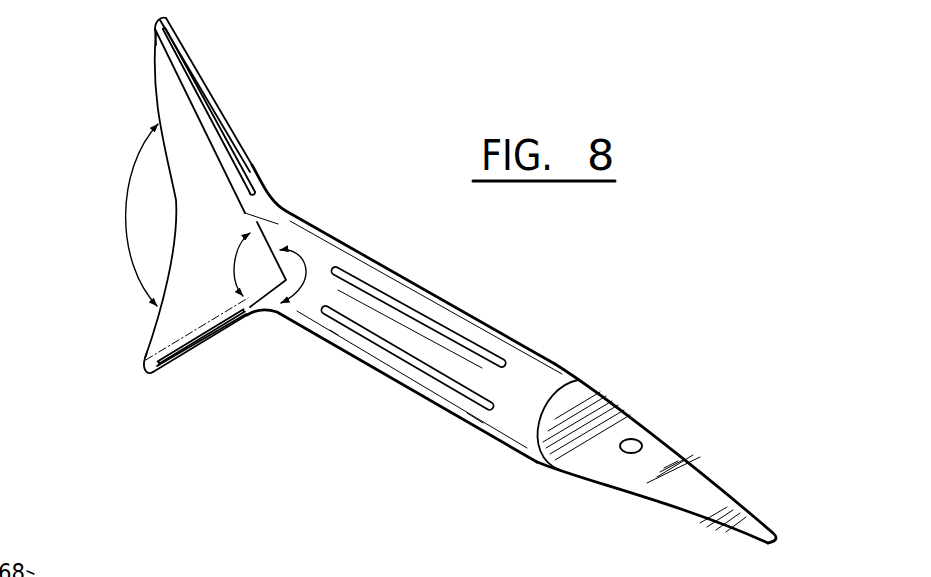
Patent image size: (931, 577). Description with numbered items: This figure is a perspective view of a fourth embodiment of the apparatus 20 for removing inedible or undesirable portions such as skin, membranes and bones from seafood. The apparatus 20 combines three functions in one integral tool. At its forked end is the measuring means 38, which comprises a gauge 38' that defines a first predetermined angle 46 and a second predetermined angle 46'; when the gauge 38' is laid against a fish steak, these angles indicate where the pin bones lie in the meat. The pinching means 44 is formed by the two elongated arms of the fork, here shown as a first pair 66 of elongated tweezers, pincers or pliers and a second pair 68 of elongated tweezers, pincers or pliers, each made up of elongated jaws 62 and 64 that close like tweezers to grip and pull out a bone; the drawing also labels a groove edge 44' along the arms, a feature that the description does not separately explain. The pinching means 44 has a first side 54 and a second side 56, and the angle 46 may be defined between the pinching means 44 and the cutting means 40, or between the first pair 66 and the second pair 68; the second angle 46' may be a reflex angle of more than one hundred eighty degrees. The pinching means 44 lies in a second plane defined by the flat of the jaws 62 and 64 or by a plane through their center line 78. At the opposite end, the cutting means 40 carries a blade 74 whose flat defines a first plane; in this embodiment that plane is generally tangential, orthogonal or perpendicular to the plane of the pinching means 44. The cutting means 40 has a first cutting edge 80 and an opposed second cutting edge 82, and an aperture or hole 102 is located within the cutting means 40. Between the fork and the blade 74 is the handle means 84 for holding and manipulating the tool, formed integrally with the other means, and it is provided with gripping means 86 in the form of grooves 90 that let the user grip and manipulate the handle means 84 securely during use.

The apparatus 20 is at (526, 499).
The measuring means 38 is at (234, 195).
The gauge 38' is at (284, 176).
The cutting means 40 is at (628, 482).
The pinching means 44 is at (223, 219).
The groove edge 44' is at (207, 108).
The first predetermined angle 46 is at (187, 263).
The second predetermined angle 46' is at (356, 235).
The first side of pinching means 54 is at (153, 110).
The second side of pinching means 56 is at (160, 72).
The jaw 62 is at (152, 53).
The jaw 64 is at (175, 33).
The first pair of elongated tweezers 66 is at (150, 377).
The second pair of elongated tweezers 68 is at (160, 17).
The blade 74 is at (647, 440).
The center line 78 is at (180, 198).
The first cutting edge 80 is at (680, 518).
The second cutting edge 82 is at (723, 489).
The handle means 84 is at (463, 332).
The gripping means 86 is at (434, 377).
The grooves 90 is at (403, 307).
The aperture or hole 102 is at (626, 438).